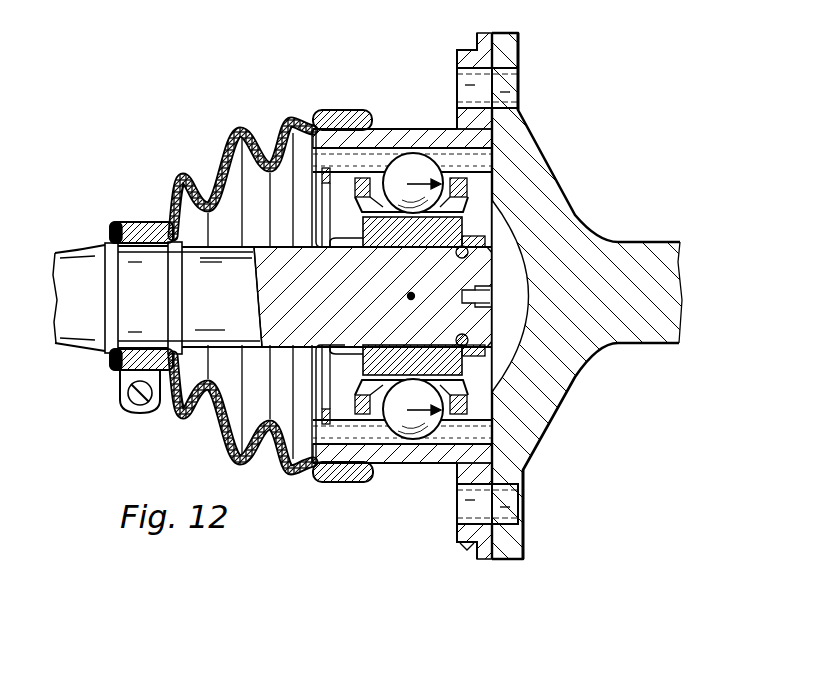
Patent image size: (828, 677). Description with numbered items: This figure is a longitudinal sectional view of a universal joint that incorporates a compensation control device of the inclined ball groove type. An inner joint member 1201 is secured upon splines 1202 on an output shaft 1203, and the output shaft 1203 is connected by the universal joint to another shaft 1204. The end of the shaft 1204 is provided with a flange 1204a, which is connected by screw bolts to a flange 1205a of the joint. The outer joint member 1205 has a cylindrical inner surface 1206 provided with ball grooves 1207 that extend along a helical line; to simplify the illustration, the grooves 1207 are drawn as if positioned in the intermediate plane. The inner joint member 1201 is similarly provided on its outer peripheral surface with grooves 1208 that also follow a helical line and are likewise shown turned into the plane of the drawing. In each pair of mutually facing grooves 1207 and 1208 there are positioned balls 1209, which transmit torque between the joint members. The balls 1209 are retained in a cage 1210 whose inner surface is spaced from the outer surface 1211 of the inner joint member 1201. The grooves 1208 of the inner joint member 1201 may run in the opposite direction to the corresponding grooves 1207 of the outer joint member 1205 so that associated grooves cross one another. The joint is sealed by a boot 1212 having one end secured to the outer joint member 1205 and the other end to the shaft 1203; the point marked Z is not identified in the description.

The inner joint member 1201 is at (493, 190).
The splines 1202 is at (318, 202).
The output shaft 1203 is at (275, 273).
The shaft 1204 is at (623, 270).
The flange 1204a is at (538, 410).
The outer joint member 1205 is at (360, 452).
The flange of the joint 1205a is at (466, 546).
The cylindrical inner surface 1206 is at (341, 244).
The ball grooves 1207 is at (520, 110).
The grooves 1208 is at (450, 210).
The balls 1209 is at (403, 419).
The cage 1210 is at (363, 178).
The outer surface 1211 is at (523, 470).
The boot 1212 is at (168, 184).
The center point Z is at (409, 298).